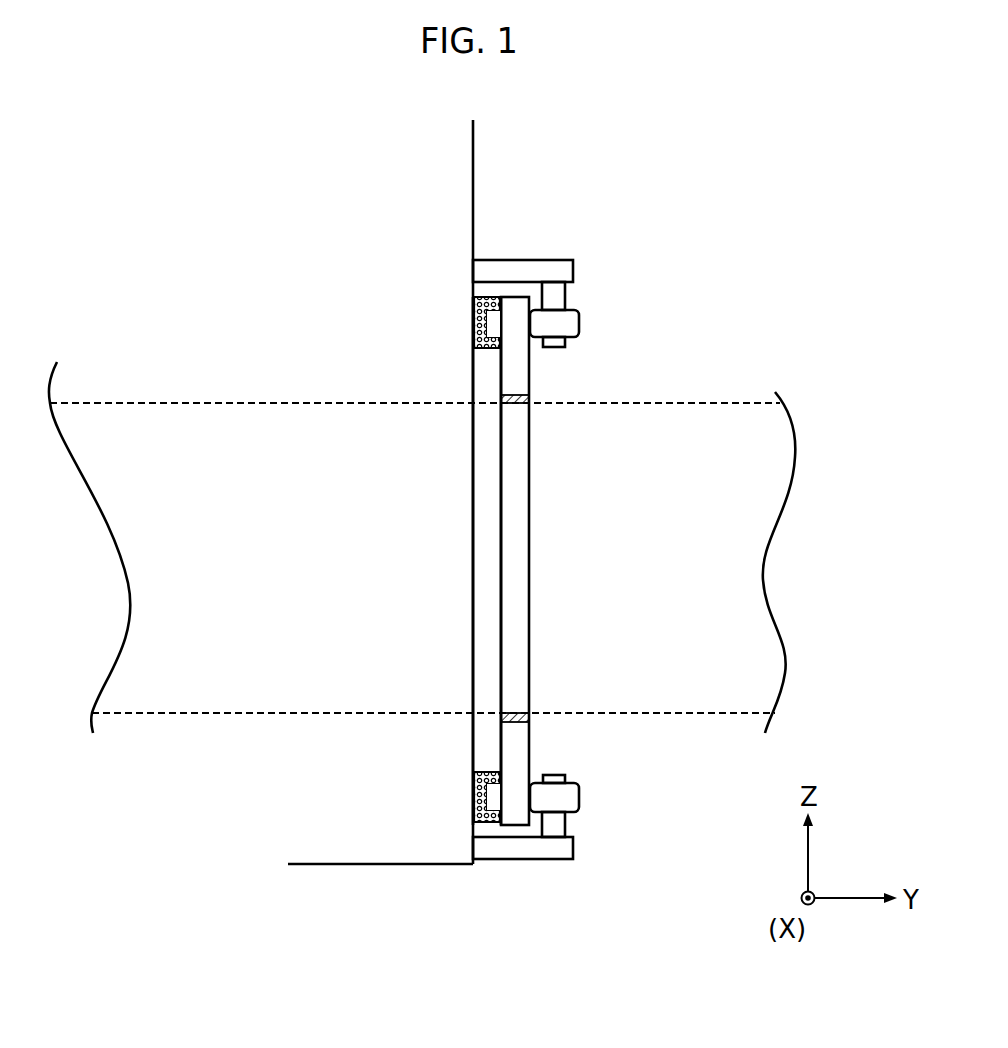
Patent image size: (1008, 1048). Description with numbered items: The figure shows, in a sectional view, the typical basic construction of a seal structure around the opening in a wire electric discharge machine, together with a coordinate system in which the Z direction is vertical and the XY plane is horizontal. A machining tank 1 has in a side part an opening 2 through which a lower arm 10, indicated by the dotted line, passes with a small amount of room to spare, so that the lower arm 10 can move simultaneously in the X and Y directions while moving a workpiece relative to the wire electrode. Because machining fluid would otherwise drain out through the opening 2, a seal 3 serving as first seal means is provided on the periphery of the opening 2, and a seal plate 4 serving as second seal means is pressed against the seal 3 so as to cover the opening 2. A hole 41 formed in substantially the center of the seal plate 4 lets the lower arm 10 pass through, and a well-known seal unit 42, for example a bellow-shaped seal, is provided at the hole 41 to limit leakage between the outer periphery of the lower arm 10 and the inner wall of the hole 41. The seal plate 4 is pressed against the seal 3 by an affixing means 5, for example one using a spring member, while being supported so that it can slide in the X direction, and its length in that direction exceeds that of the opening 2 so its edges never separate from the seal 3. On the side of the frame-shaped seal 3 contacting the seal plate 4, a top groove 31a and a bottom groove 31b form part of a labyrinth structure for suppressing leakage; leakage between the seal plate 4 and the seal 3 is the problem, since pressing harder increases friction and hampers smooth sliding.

The machining tank 1 is at (316, 870).
The opening 2 is at (488, 556).
The seal 3 is at (466, 327).
The seal plate 4 is at (557, 561).
The affixing means 5 is at (588, 796).
The lower arm 10 is at (718, 403).
The top groove 31a is at (494, 306).
The bottom groove 31b is at (495, 802).
The hole 41 is at (518, 553).
The seal unit 42 is at (529, 396).